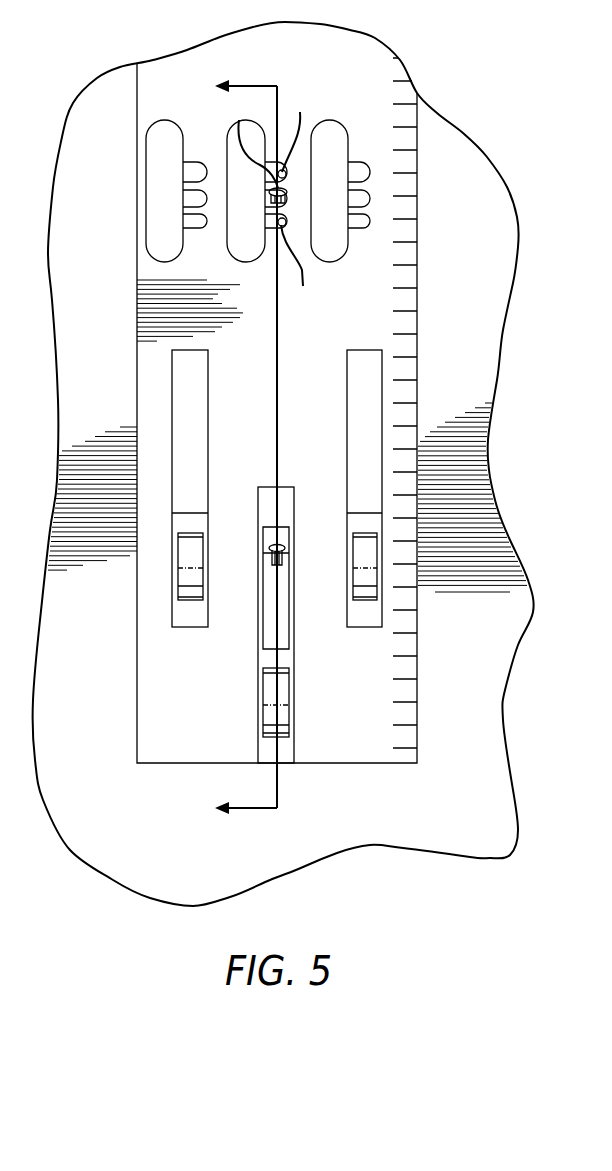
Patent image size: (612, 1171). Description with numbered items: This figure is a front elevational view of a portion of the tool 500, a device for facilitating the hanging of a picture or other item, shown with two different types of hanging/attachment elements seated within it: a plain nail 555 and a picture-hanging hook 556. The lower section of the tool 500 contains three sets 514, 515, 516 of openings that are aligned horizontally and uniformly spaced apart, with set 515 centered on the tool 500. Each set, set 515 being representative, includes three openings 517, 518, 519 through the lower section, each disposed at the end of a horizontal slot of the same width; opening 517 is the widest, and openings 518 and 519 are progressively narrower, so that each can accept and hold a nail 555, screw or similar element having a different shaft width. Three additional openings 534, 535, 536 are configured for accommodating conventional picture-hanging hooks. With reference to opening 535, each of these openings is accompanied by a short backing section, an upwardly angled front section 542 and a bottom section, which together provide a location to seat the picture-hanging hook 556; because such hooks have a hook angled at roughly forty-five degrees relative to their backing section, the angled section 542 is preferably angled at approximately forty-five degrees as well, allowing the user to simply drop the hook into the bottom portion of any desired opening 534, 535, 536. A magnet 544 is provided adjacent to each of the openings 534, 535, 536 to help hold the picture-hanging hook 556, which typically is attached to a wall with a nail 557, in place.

The tool 500 is at (108, 707).
The set of openings 514 is at (163, 261).
The set of openings 515 is at (243, 262).
The set of openings 516 is at (338, 196).
The opening 517 is at (298, 131).
The opening 518 is at (285, 202).
The opening 519 is at (298, 266).
The opening 534 is at (195, 408).
The opening 535 is at (266, 497).
The opening 536 is at (357, 418).
The upwardly angled front section 542 is at (285, 658).
The magnet 544 is at (282, 690).
The nail 555 is at (249, 142).
The picture-hanging hook 556 is at (268, 604).
The nail 557 is at (279, 524).